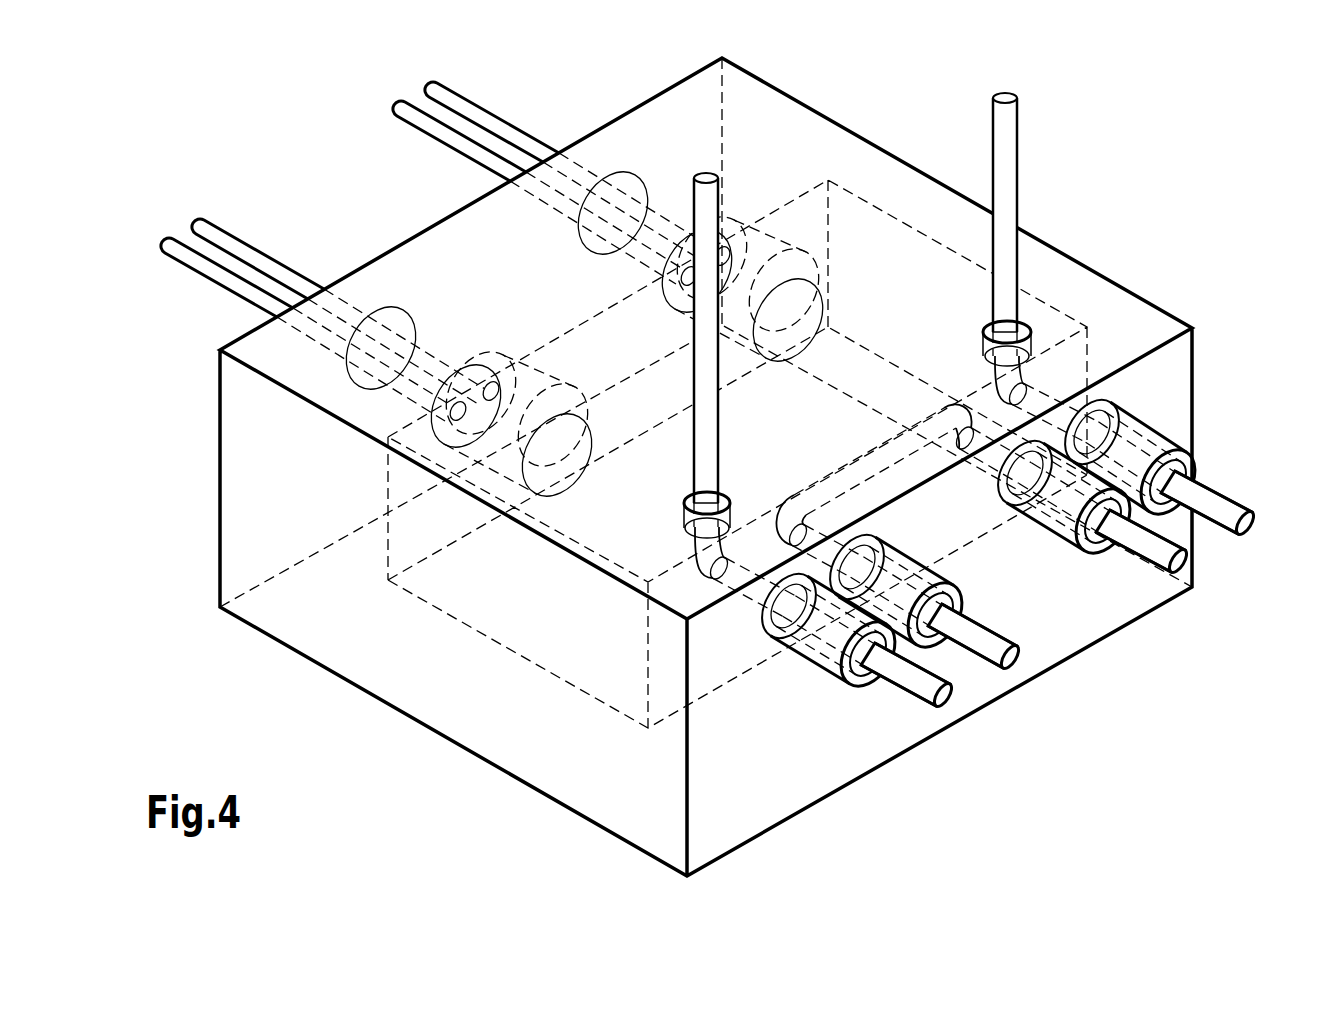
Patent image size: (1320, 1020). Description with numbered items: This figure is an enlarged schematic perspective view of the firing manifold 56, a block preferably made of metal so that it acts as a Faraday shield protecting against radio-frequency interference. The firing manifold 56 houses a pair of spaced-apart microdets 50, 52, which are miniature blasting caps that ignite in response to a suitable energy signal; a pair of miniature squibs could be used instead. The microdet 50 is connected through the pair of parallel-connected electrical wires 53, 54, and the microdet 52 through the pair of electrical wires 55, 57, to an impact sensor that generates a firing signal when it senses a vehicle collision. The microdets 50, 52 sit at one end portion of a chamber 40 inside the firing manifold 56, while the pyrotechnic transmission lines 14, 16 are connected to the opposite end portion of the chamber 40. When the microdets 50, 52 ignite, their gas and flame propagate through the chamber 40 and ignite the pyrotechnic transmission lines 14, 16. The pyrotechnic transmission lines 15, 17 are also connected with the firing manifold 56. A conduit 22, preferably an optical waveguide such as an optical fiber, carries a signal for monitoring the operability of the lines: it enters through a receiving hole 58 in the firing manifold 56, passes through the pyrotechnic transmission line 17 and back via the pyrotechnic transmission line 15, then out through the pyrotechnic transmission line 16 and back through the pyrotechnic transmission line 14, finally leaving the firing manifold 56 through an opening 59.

The pyrotechnic transmission line 14 is at (1153, 435).
The pyrotechnic transmission line 15 is at (943, 573).
The pyrotechnic transmission line 16 is at (1073, 543).
The pyrotechnic transmission line 17 is at (833, 675).
The conduit 22 is at (1007, 157).
The chamber 40 is at (743, 642).
The microdet 50 is at (780, 243).
The microdet 52 is at (487, 480).
The electrical wire 53 is at (455, 100).
The electrical wire 54 is at (463, 149).
The electrical wire 55 is at (242, 243).
The firing manifold 56 is at (448, 800).
The electrical wire 57 is at (227, 280).
The receiving hole 58 is at (706, 512).
The opening 59 is at (1007, 340).